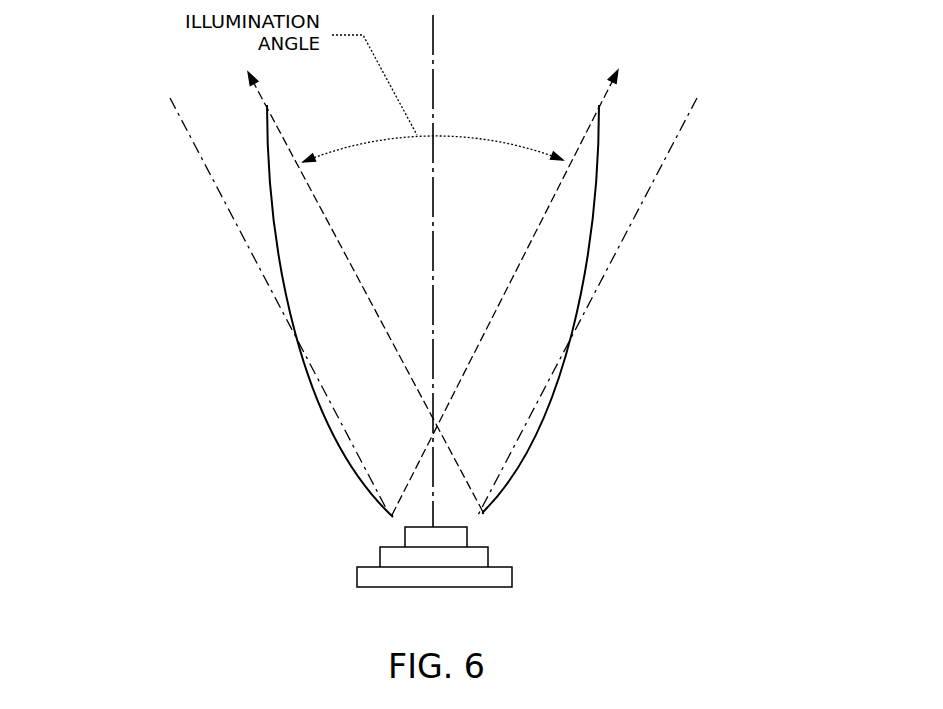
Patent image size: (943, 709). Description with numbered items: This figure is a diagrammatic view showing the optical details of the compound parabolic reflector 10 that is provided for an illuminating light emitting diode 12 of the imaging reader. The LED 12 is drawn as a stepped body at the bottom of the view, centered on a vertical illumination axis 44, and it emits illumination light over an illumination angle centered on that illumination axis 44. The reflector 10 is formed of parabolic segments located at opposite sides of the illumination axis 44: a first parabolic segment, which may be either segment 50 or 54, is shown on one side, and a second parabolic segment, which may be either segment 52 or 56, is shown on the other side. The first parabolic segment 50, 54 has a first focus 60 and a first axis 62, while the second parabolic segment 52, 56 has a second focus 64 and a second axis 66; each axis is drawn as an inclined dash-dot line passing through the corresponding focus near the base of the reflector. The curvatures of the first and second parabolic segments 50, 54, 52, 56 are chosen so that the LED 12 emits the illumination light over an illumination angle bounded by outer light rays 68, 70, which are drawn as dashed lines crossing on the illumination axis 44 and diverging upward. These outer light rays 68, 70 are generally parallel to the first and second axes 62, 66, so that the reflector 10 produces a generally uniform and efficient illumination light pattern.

The compound parabolic reflector 10 is at (647, 92).
The light emitting diode 12 is at (440, 588).
The illumination axis 44 is at (435, 86).
The first parabolic segment 50 is at (557, 386).
The first parabolic segment 54 is at (557, 308).
The second parabolic segment 52 is at (316, 396).
The second parabolic segment 56 is at (329, 311).
The first focus 60 is at (388, 513).
The first axis 62 is at (225, 202).
The second focus 64 is at (486, 512).
The second axis 66 is at (648, 197).
The outer light ray 68 is at (362, 291).
The outer light ray 70 is at (506, 288).